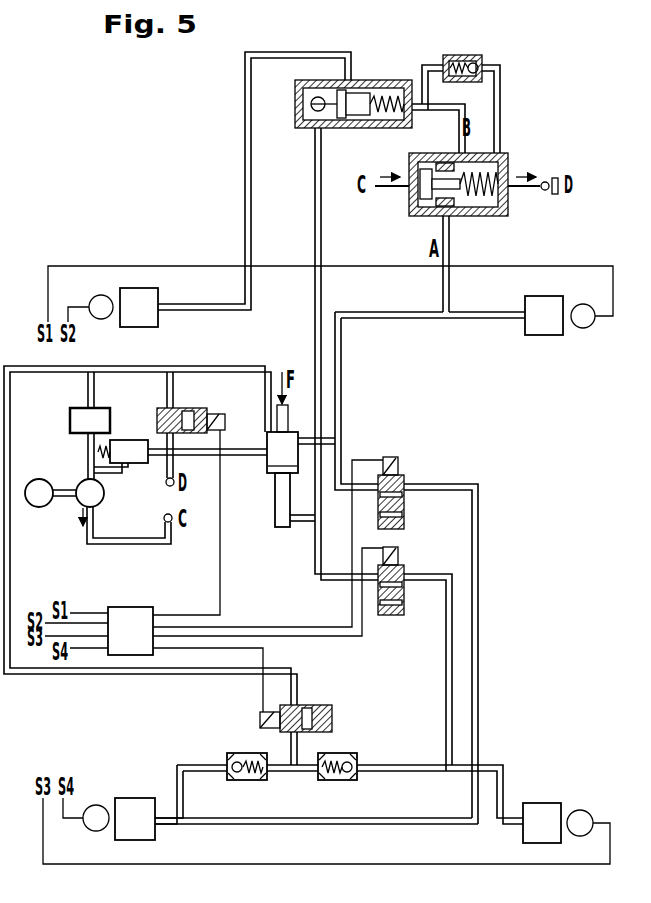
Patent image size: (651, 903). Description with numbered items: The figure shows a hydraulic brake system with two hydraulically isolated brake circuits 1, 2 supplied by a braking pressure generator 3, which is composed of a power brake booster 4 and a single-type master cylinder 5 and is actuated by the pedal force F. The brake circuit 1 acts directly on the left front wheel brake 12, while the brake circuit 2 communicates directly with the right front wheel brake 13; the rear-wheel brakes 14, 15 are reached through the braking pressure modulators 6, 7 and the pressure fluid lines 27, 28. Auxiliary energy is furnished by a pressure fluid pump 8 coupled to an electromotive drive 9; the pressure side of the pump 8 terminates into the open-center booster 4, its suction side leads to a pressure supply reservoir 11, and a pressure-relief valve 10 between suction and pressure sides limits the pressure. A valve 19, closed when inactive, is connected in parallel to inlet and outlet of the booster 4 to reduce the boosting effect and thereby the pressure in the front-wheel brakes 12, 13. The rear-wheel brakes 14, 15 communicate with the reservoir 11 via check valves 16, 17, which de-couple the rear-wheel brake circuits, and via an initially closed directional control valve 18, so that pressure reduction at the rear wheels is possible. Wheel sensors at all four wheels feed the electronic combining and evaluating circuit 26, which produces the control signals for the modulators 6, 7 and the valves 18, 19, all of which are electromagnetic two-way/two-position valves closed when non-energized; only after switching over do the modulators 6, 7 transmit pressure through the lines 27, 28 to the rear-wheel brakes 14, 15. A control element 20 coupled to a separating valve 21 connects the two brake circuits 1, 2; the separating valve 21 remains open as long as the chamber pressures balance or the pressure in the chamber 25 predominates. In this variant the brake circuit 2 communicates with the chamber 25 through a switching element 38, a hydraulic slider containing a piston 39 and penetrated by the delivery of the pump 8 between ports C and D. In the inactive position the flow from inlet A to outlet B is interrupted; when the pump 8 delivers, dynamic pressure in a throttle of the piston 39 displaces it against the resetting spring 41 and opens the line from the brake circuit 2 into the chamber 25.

The brake circuit 1 is at (315, 395).
The brake circuit 2 is at (341, 394).
The braking pressure generator 3 is at (267, 440).
The power brake booster 4 is at (268, 468).
The master cylinder 5 is at (275, 515).
The braking pressure modulator 6 is at (404, 592).
The braking pressure modulator 7 is at (404, 501).
The pressure fluid pump 8 is at (80, 481).
The electromotive drive 9 is at (32, 481).
The pressure-relief valve 10 is at (132, 440).
The pressure supply reservoir 11 is at (70, 422).
The front-wheel brake 12 is at (143, 288).
The front-wheel brake 13 is at (547, 296).
The rear-wheel brake 14 is at (142, 840).
The rear-wheel brake 15 is at (548, 843).
The check valve 16 is at (247, 780).
The check valve 17 is at (337, 780).
The two-way/two-position directional control valve 18 is at (332, 718).
The valve 19 is at (185, 408).
The control element 20 is at (341, 96).
The separating valve 21 is at (306, 130).
The chamber 25 is at (390, 124).
The electronic combining and evaluating circuit 26 is at (130, 655).
The pressure fluid line 27 is at (446, 714).
The pressure fluid line 28 is at (478, 714).
The switching element 38 is at (466, 172).
The piston 39 is at (460, 216).
The resetting spring 41 is at (489, 216).